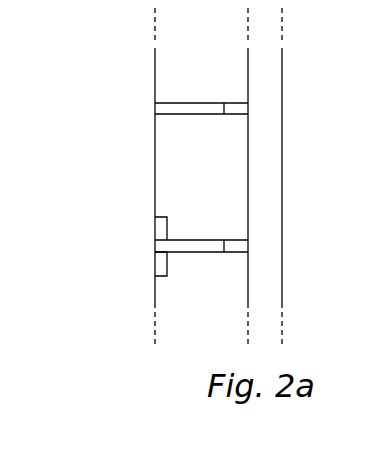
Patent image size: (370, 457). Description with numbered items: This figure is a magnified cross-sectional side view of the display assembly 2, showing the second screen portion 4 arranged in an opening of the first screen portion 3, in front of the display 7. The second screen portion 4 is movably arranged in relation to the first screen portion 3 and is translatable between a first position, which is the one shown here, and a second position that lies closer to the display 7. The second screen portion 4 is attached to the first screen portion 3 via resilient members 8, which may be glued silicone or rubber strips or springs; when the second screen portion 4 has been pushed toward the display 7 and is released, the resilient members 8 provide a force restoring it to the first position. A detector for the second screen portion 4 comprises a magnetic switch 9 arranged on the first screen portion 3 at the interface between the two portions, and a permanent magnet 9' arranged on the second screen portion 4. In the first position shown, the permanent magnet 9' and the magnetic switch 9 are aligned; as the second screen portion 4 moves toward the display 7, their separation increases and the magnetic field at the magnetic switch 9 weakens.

The display assembly 2 is at (104, 50).
The first screen portion 3 is at (210, 72).
The second screen portion 4 is at (210, 185).
The display 7 is at (313, 185).
The resilient member 8 is at (248, 114).
The magnetic switch 9 is at (112, 254).
The permanent magnet 9' is at (113, 215).